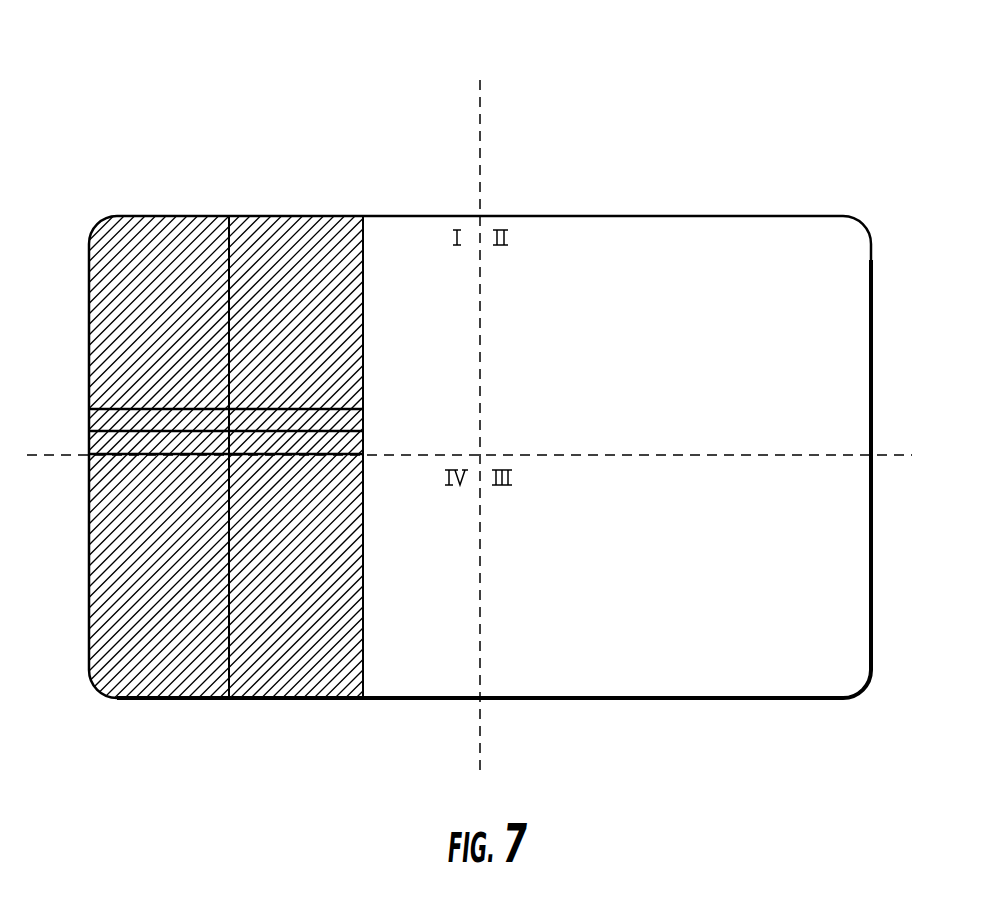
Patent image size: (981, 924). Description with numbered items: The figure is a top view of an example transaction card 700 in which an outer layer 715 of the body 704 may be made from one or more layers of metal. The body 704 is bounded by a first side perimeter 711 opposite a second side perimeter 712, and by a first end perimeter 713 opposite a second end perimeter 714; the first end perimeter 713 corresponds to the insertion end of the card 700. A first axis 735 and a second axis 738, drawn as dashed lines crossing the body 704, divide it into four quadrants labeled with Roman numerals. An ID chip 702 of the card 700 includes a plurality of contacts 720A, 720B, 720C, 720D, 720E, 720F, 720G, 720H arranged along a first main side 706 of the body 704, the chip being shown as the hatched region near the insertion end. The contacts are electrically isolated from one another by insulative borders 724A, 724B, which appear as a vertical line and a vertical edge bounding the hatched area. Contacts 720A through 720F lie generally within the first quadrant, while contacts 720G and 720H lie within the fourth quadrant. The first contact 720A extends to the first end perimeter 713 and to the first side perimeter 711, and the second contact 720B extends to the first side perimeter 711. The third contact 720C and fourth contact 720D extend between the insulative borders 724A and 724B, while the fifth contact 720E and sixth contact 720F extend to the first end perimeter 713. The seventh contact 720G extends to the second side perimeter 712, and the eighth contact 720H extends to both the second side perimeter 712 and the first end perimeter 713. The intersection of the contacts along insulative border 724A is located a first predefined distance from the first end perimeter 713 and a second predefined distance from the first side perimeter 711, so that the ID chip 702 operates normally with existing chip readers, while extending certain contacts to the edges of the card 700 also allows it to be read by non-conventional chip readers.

The card 700 is at (705, 100).
The ID chip 702 is at (152, 372).
The body 704 is at (793, 208).
The first main side 706 is at (848, 273).
The first side perimeter 711 is at (614, 216).
The second side perimeter 712 is at (606, 700).
The first end perimeter 713 is at (86, 612).
The second end perimeter 714 is at (878, 367).
The outer layer 715 is at (779, 595).
The first contact 720A is at (163, 235).
The second contact 720B is at (290, 235).
The third contact 720C is at (333, 416).
The fourth contact 720D is at (330, 448).
The fifth contact 720E is at (135, 446).
The sixth contact 720F is at (135, 413).
The seventh contact 720G is at (318, 680).
The eighth contact 720H is at (155, 680).
The insulative border 724A is at (230, 243).
The insulative border 724B is at (365, 245).
The first axis 735 is at (479, 148).
The second axis 738 is at (884, 457).